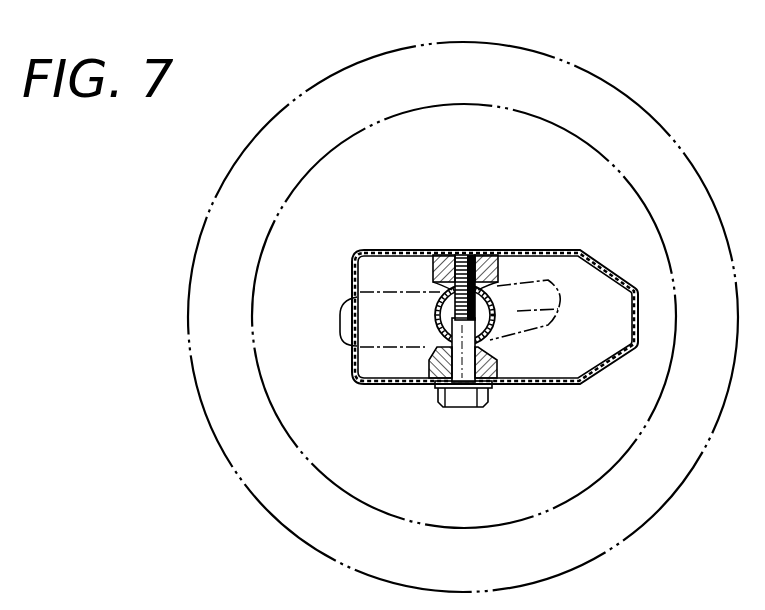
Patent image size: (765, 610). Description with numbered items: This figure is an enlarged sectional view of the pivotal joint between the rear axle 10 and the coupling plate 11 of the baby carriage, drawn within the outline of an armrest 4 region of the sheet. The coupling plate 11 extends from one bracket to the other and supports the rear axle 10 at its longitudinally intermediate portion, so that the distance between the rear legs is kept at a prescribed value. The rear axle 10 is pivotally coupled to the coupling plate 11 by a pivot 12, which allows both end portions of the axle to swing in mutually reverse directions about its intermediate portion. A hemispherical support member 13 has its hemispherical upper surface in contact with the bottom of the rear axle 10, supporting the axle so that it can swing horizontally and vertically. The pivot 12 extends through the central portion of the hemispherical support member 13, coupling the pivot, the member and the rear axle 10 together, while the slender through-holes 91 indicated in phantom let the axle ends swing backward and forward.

The armrest 4 is at (543, 88).
The rear axle 10 is at (437, 316).
The coupling plate 11 is at (393, 250).
The pivot 12 is at (488, 407).
The hemispherical support member 13 is at (490, 357).
The through-hole 91 is at (558, 309).